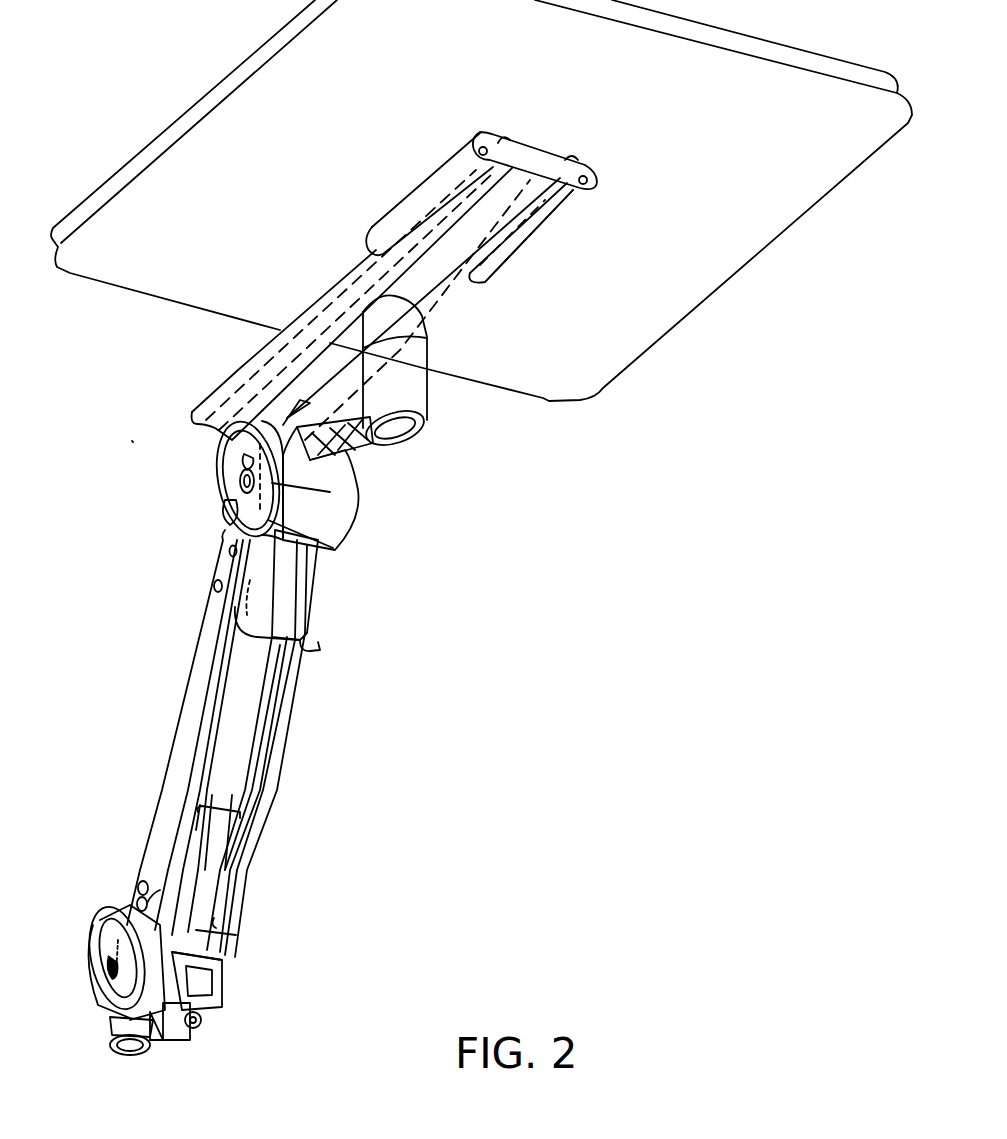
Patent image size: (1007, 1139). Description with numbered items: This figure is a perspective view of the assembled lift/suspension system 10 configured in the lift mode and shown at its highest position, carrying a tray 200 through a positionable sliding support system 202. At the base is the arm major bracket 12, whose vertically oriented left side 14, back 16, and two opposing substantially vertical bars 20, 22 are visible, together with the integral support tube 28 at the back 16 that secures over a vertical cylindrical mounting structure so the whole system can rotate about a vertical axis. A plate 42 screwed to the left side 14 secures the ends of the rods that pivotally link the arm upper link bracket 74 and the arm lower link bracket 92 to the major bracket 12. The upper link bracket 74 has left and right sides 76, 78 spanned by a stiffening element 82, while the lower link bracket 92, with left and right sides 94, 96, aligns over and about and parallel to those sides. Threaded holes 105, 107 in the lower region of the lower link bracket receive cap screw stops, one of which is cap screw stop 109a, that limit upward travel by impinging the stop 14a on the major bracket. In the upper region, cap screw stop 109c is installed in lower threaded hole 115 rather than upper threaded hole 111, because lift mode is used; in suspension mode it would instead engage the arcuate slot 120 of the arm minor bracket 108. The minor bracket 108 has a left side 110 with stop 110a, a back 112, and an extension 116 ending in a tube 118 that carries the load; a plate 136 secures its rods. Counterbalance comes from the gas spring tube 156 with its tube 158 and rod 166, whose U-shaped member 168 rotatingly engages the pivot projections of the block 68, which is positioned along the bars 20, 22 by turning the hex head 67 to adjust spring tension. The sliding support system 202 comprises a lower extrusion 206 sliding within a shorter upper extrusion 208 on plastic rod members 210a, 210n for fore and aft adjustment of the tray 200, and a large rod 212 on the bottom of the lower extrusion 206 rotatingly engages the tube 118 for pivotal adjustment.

The lift/suspension system 10 is at (135, 441).
The arm major bracket 12 is at (95, 958).
The left side 14 is at (105, 932).
The stop 14a is at (140, 884).
The back 16 is at (125, 1028).
The bar 20 is at (155, 1030).
The bar 22 is at (190, 1032).
The support tube 28 is at (122, 1052).
The plate 42 is at (112, 980).
The hex head 67 is at (200, 1024).
The block 68 is at (200, 992).
The arm upper link bracket 74 is at (148, 830).
The left side 76 is at (248, 608).
The right side 78 is at (308, 645).
The stiffening element 82 is at (300, 563).
The arm lower link bracket 92 is at (202, 612).
The left side 94 is at (205, 655).
The right side 96 is at (242, 858).
The threaded hole 105 is at (147, 903).
The threaded hole 107 is at (218, 921).
The arm minor bracket 108 is at (214, 476).
The cap screw stop 109a is at (138, 903).
The cap screw stop 109c is at (213, 585).
The left side 110 is at (228, 460).
The stop 110a is at (238, 485).
The upper threaded hole 111 is at (228, 549).
The back 112 is at (345, 512).
The lower threaded hole 115 is at (222, 588).
The extension 116 is at (338, 422).
The tube 118 is at (417, 405).
The arcuate slot 120 is at (226, 506).
The plate 136 is at (242, 460).
The gas spring tube 156 is at (230, 712).
The tube 158 is at (238, 732).
The rod 166 is at (228, 817).
The U-shaped member 168 is at (222, 954).
The tray 200 is at (651, 245).
The positionable sliding support system 202 is at (448, 302).
The lower extrusion 206 is at (547, 173).
The upper extrusion 208 is at (530, 147).
The plastic rod member 210a is at (480, 148).
The plastic rod member 210n is at (590, 178).
The large rod 212 is at (403, 322).